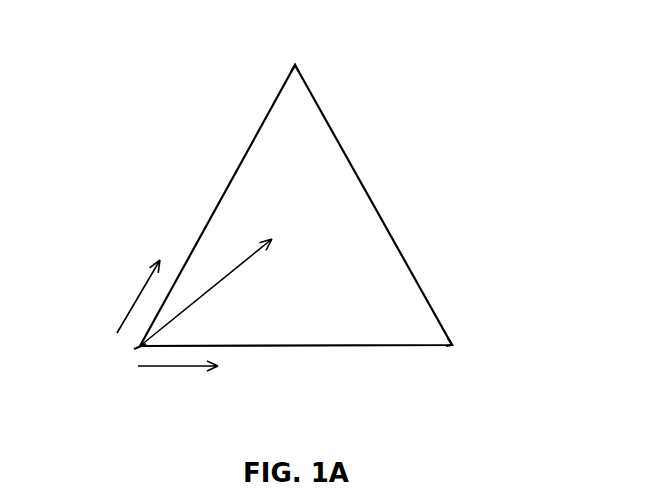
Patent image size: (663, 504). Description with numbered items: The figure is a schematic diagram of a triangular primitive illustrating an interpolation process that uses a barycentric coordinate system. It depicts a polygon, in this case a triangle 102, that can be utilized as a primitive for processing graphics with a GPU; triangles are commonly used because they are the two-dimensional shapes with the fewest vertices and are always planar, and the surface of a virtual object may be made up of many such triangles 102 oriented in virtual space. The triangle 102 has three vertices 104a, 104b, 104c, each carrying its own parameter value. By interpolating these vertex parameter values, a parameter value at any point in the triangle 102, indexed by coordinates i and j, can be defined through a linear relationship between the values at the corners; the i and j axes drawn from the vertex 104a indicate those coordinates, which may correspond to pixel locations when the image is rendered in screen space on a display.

The triangle 102 is at (150, 140).
The vertex 104a is at (140, 346).
The vertex 104b is at (295, 65).
The vertex 104c is at (452, 345).